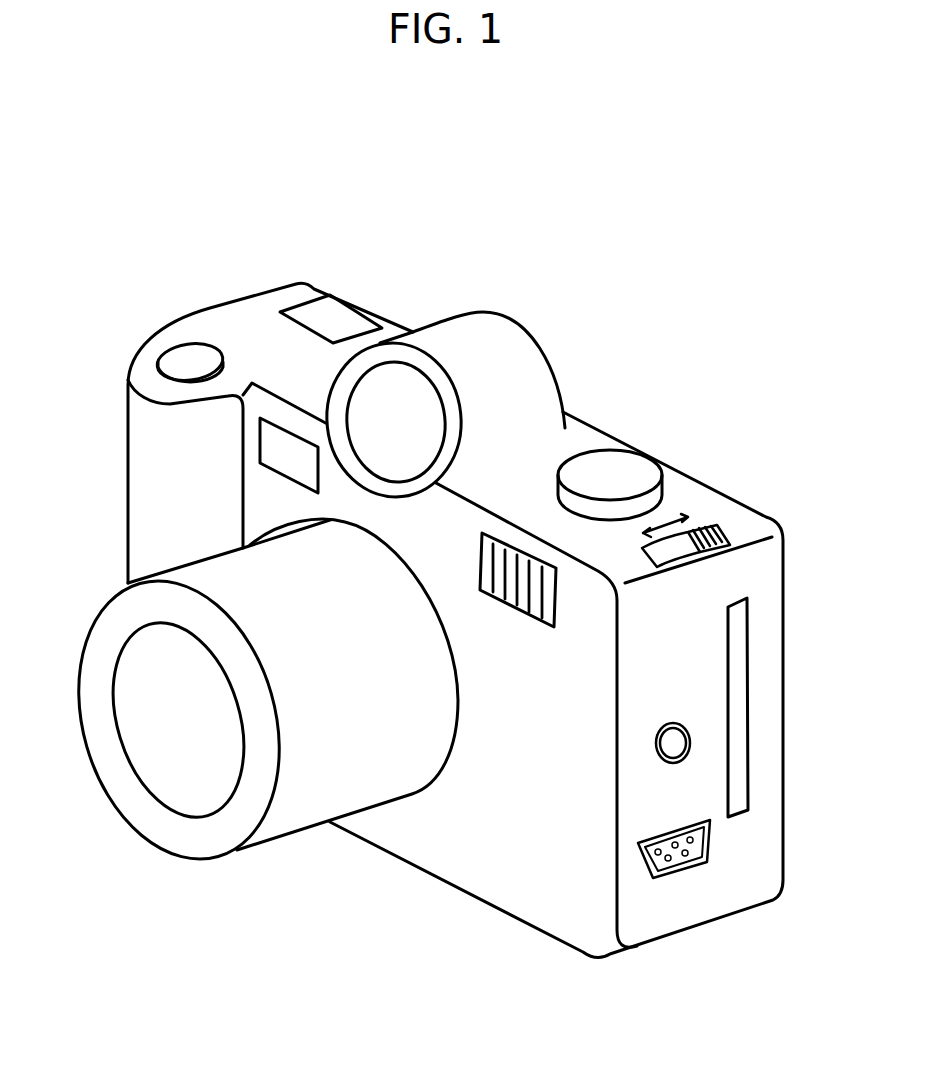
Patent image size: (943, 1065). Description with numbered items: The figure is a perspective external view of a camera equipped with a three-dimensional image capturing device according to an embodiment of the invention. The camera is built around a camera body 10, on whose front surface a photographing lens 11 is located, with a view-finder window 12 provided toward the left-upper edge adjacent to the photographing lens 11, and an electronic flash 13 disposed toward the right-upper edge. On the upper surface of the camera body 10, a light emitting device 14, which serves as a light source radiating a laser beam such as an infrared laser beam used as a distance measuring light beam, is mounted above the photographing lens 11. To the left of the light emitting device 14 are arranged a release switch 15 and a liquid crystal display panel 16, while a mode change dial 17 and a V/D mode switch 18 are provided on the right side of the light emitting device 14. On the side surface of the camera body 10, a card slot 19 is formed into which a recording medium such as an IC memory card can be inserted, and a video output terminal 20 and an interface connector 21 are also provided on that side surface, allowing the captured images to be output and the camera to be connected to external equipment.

The camera body 10 is at (502, 863).
The photographing lens 11 is at (207, 835).
The view-finder window 12 is at (283, 452).
The electronic flash 13 is at (517, 612).
The light emitting device 14 is at (475, 337).
The release switch 15 is at (190, 360).
The liquid crystal display panel 16 is at (331, 318).
The mode change dial 17 is at (608, 475).
The V/D mode switch 18 is at (715, 527).
The card slot 19 is at (740, 645).
The video output terminal 20 is at (675, 743).
The interface connector 21 is at (697, 847).